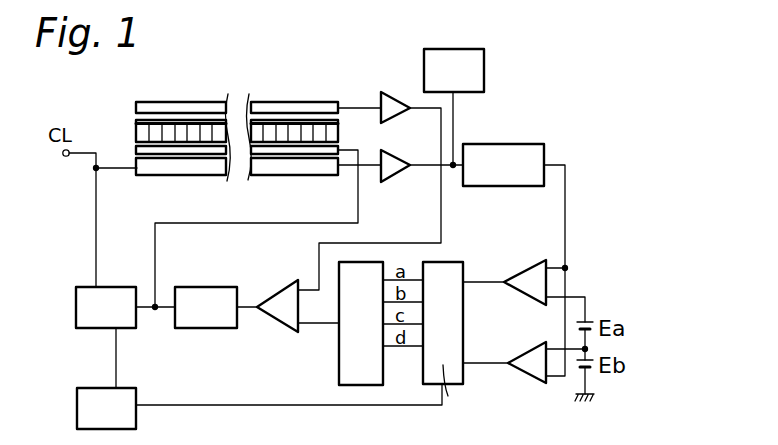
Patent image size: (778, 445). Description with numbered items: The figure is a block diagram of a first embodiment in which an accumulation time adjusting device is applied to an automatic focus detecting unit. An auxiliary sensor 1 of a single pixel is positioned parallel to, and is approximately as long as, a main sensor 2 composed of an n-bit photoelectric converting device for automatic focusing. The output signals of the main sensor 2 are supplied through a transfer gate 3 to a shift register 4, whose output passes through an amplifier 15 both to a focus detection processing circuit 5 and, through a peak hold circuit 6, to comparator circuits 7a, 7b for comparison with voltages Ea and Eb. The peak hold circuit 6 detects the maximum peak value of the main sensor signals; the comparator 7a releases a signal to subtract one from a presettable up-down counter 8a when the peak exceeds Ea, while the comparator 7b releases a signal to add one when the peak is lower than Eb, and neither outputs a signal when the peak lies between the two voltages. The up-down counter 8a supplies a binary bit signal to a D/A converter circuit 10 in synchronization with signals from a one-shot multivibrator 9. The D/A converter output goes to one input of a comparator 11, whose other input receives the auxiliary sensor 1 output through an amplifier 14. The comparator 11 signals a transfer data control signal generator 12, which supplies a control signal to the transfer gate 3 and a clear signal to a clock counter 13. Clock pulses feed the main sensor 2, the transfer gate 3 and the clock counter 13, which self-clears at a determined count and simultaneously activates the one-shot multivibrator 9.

The auxiliary sensor 1 is at (186, 96).
The main sensor 2 is at (137, 131).
The transfer gate 3 is at (153, 154).
The shift register 4 is at (203, 176).
The focus detection processing circuit 5 is at (484, 58).
The peak hold circuit 6 is at (519, 144).
The comparator circuit 7a is at (537, 260).
The comparator circuit 7b is at (526, 352).
The presettable up-down counter 8a is at (459, 262).
The one-shot multivibrator 9 is at (137, 393).
The D/A converter circuit 10 is at (339, 384).
The comparator 11 is at (281, 330).
The transfer data control signal generator 12 is at (207, 328).
The clock counter 13 is at (119, 285).
The amplifier 14 is at (390, 92).
The amplifier 15 is at (393, 157).